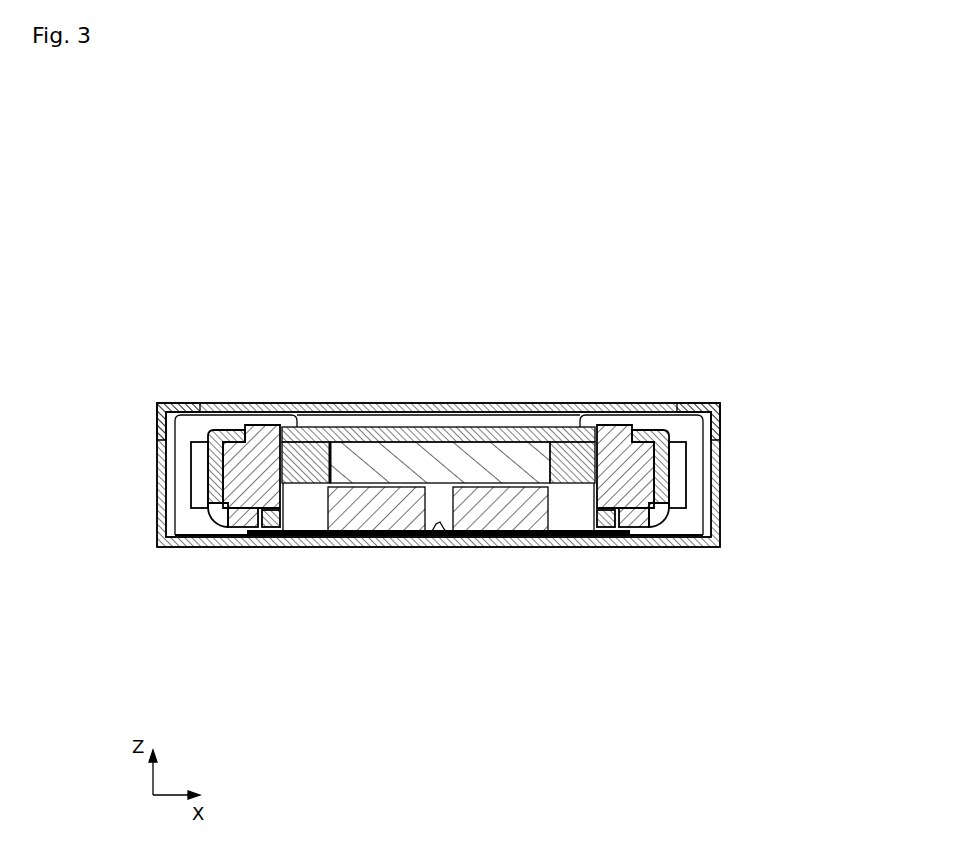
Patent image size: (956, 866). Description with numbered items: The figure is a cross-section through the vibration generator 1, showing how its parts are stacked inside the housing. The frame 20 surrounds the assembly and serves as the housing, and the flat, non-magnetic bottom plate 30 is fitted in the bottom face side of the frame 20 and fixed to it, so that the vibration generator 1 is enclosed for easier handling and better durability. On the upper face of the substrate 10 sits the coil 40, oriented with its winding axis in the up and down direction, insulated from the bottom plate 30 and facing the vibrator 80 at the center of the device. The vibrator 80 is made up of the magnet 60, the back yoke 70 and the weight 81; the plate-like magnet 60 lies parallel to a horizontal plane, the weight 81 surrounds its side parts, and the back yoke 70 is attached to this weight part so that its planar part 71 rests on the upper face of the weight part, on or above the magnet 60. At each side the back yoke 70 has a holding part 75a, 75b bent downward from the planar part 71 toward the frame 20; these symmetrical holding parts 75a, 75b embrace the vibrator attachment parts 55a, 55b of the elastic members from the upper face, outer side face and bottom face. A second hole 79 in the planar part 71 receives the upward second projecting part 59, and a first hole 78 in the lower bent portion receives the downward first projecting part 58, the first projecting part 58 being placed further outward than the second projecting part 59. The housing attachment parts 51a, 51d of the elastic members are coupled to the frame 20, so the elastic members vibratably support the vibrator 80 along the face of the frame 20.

The vibration generator 1 is at (186, 191).
The substrate 10 is at (440, 537).
The frame 20 is at (328, 405).
The bottom plate 30 is at (527, 540).
The coil 40 is at (385, 537).
The housing attachment part 51a is at (670, 405).
The housing attachment part 51d is at (192, 405).
The vibrator attachment part 55a is at (588, 490).
The vibrator attachment part 55b is at (298, 490).
The first projecting part 58 is at (262, 530).
The second projecting part 59 is at (263, 410).
The magnet 60 is at (397, 410).
The back yoke 70 is at (440, 395).
The planar part 71 is at (450, 410).
The holding part 75a is at (794, 465).
The holding part 75b is at (104, 465).
The first hole 78 is at (213, 512).
The second hole 79 is at (250, 412).
The vibrator 80 is at (551, 296).
The weight 81 is at (560, 410).